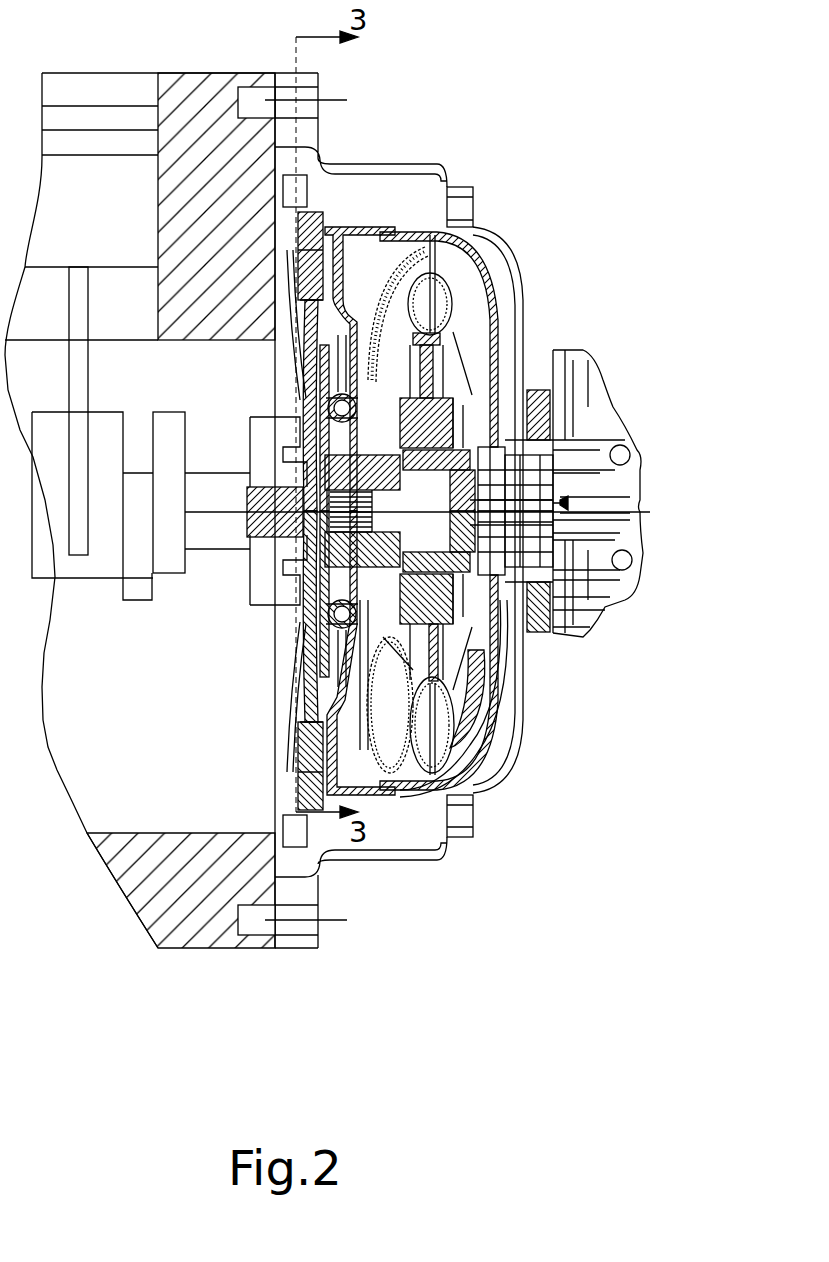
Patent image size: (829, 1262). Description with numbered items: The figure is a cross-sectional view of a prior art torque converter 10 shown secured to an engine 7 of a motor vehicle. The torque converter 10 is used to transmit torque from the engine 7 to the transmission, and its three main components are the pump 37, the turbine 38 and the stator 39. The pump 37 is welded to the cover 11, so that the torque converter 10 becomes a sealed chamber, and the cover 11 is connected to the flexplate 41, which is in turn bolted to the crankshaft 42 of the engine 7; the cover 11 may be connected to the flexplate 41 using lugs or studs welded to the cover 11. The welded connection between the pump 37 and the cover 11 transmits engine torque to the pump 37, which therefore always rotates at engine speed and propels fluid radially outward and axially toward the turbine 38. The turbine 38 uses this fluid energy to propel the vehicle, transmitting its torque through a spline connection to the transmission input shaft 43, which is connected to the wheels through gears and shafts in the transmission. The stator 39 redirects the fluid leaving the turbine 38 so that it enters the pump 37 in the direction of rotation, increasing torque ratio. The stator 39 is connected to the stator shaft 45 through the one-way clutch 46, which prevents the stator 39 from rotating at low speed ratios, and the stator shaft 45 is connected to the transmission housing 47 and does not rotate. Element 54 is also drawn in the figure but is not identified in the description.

The engine 7 is at (290, 865).
The torque converter 10 is at (496, 268).
The cover 11 is at (300, 371).
The pump 37 is at (497, 749).
The turbine 38 is at (362, 755).
The stator 39 is at (382, 670).
The flexplate 41 is at (298, 648).
The crankshaft 42 is at (228, 574).
The transmission input shaft 43 is at (617, 583).
The stator shaft 45 is at (583, 445).
The one-way clutch 46 is at (475, 612).
The transmission housing 47 is at (530, 309).
The bolt 54 is at (244, 541).